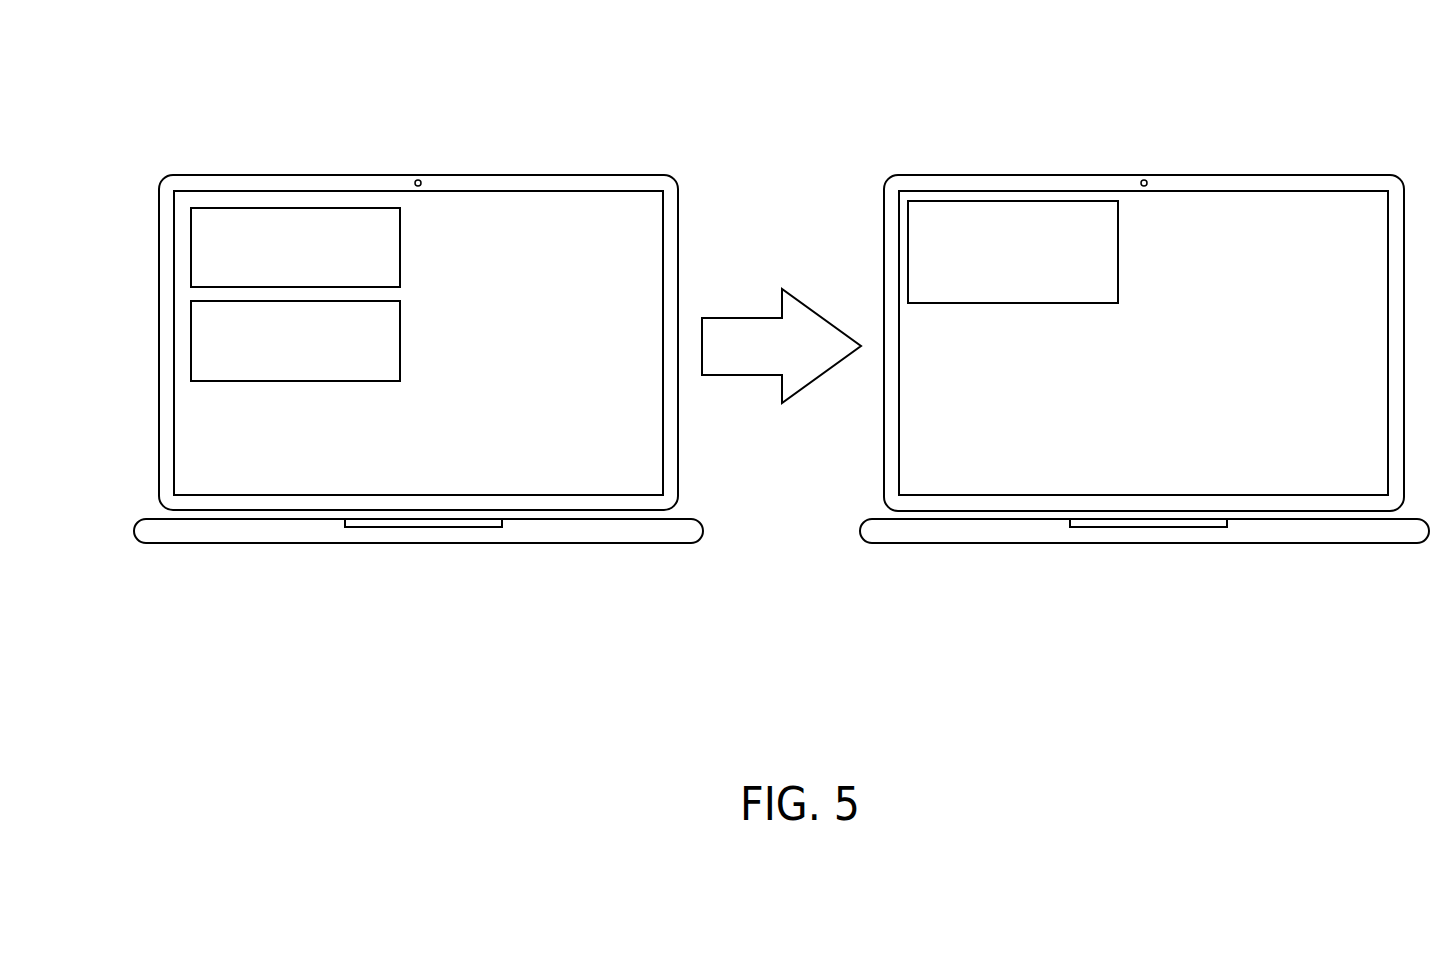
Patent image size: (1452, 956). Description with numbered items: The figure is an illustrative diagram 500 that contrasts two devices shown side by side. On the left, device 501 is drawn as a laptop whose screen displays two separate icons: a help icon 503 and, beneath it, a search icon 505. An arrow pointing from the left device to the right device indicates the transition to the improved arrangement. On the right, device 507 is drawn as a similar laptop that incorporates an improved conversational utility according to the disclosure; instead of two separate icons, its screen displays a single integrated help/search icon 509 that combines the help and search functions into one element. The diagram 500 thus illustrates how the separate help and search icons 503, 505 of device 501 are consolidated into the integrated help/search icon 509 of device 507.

The illustrative diagram 500 is at (247, 82).
The device 501 is at (523, 175).
The help icon 503 is at (191, 250).
The search icon 505 is at (191, 343).
The device 507 is at (1282, 175).
The integrated help/search icon 509 is at (908, 255).